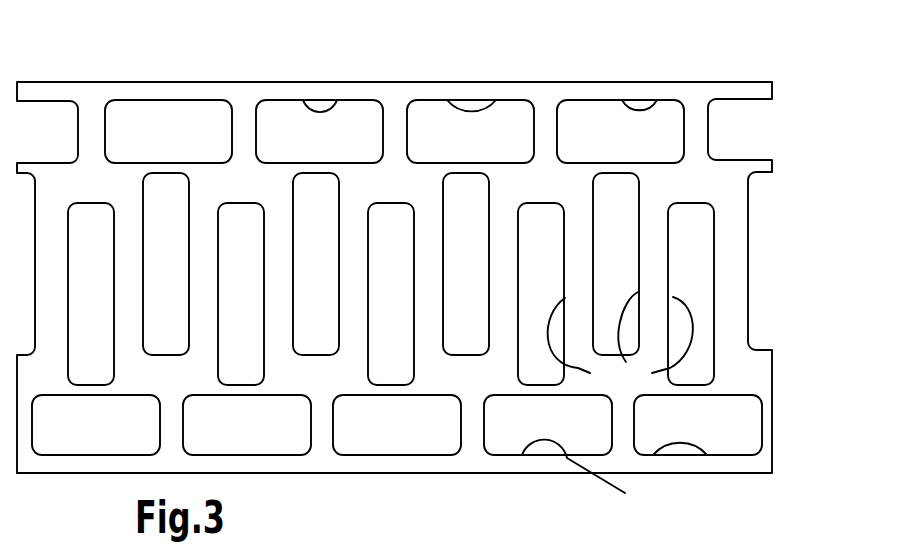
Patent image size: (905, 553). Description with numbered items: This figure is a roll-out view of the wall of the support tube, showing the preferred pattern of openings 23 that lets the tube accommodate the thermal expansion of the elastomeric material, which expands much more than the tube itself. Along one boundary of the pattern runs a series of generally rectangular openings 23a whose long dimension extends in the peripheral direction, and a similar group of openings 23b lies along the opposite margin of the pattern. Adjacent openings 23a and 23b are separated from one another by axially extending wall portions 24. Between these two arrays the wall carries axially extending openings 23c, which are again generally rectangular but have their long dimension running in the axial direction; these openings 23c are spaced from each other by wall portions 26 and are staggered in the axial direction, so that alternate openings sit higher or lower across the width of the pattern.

The openings 23 is at (138, 168).
The generally rectangular openings 23a is at (447, 103).
The openings 23b is at (658, 454).
The axially extending openings 23c is at (590, 373).
The axially extending wall portions 24 is at (543, 128).
The wall portions 26 is at (652, 257).